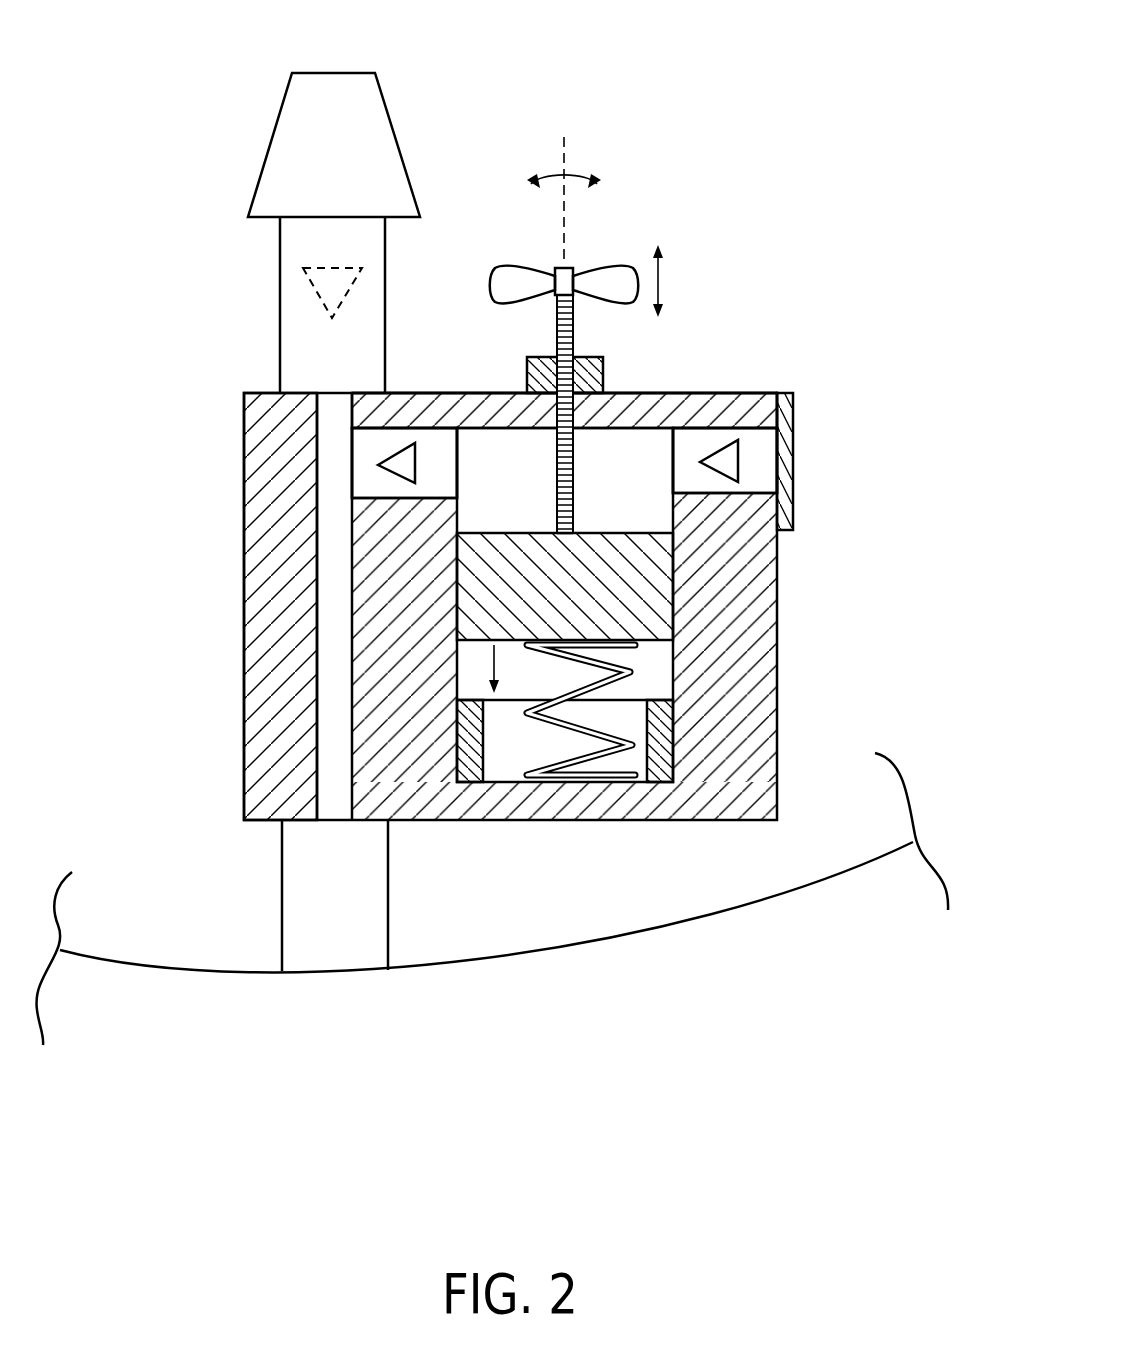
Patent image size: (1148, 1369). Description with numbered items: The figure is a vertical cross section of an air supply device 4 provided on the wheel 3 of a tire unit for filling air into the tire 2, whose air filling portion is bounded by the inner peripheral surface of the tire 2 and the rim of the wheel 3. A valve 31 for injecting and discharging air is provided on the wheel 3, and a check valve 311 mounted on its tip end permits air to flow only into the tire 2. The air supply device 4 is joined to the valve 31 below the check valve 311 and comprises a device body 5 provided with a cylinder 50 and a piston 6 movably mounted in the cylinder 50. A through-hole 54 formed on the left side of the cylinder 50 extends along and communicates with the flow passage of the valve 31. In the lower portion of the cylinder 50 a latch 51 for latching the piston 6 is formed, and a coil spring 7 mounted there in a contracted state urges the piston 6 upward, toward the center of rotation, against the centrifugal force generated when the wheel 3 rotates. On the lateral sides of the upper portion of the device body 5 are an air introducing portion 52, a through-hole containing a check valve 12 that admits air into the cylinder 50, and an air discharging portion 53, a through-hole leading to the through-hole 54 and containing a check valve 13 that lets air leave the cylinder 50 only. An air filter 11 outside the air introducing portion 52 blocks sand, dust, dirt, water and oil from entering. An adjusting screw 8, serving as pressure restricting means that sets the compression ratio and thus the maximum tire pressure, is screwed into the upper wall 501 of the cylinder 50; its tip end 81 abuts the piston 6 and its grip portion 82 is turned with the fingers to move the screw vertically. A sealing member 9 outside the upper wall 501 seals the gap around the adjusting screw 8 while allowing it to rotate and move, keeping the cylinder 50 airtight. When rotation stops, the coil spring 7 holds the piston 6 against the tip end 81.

The tire 2 is at (562, 978).
The wheel 3 is at (190, 920).
The air supply device 4 is at (700, 140).
The device body 5 is at (764, 385).
The upper wall 501 is at (688, 412).
The cylinder 50 is at (641, 390).
The air filter 11 is at (797, 425).
The check valve for introduction of air 12 is at (722, 460).
The check valve for discharging of air 13 is at (403, 462).
The air discharging portion 53 is at (436, 458).
The air introducing portion 52 is at (758, 465).
The through-hole 54 is at (335, 572).
The valve 31 is at (305, 348).
The check valve 311 is at (300, 284).
The adjusting screw 8 is at (558, 337).
The tip end 81 is at (575, 518).
The grip portion 82 is at (612, 283).
The sealing member 9 is at (540, 375).
The piston 6 is at (650, 603).
The coil spring 7 is at (620, 662).
The latch 51 is at (655, 735).